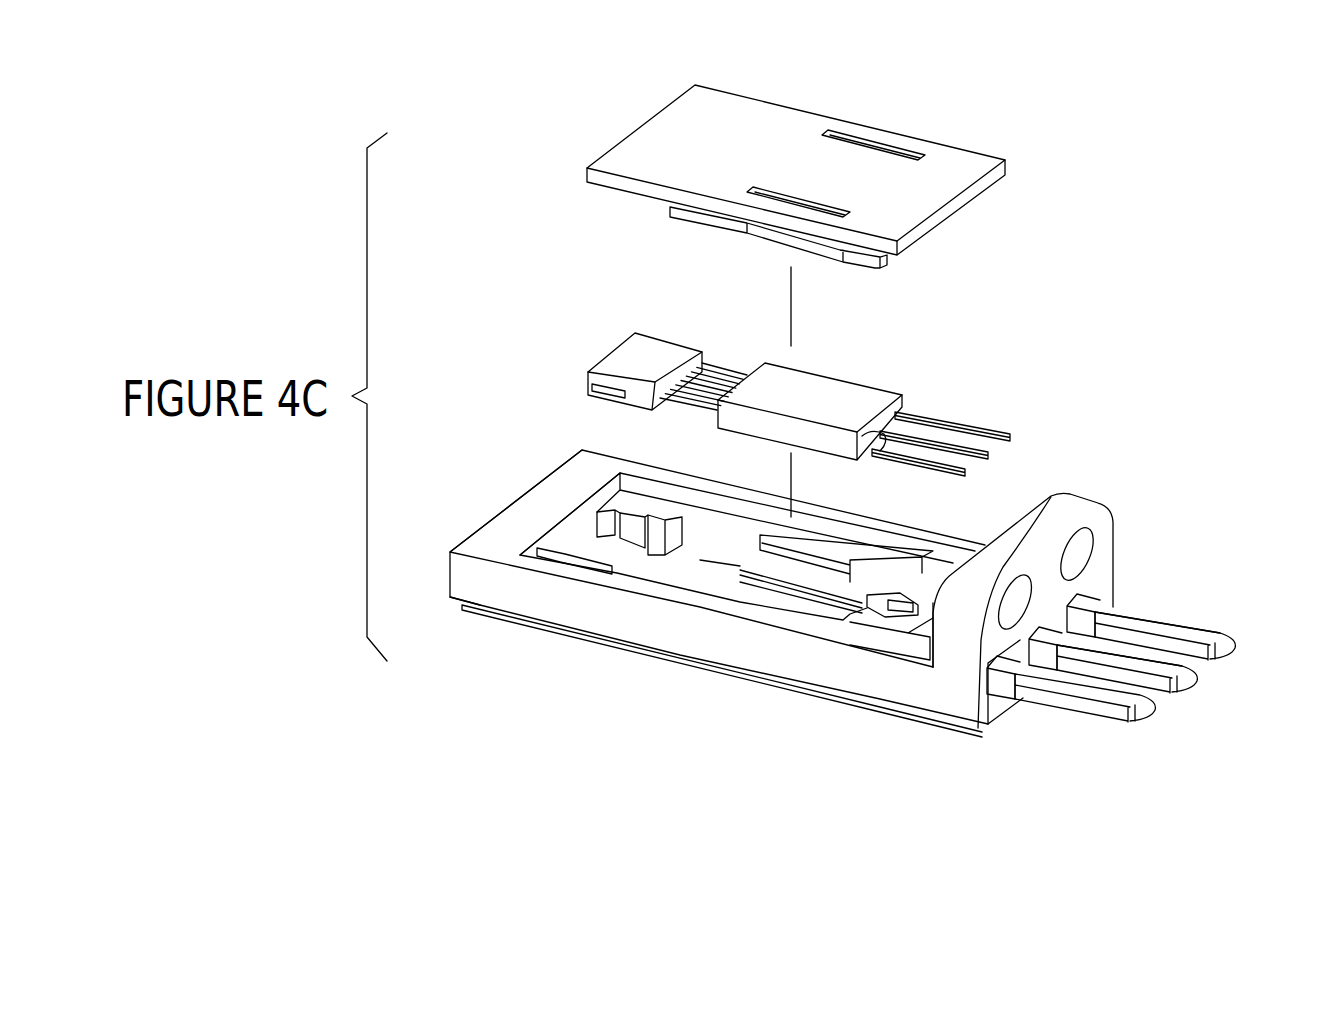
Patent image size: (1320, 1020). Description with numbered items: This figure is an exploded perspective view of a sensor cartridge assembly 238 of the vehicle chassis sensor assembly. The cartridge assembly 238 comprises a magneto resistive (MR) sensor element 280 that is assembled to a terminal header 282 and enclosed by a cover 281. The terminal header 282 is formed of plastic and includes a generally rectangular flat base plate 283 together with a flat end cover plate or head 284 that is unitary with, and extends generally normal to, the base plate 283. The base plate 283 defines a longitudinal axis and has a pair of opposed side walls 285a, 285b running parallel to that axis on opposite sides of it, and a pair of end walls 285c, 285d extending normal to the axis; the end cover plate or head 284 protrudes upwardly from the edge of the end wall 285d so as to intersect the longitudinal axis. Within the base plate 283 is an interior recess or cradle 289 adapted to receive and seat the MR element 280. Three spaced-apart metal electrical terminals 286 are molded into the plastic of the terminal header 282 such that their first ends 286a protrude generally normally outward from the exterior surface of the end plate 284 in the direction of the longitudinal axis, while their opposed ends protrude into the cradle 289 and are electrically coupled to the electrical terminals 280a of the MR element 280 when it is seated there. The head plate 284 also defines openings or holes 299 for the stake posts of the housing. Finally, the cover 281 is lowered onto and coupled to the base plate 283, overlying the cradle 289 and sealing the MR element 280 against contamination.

The cartridge assembly 238 is at (1153, 262).
The cover 281 is at (855, 125).
The magneto resistive (MR) sensor element 280 is at (842, 382).
The electrical terminals 280a is at (958, 455).
The terminal header 282 is at (776, 685).
The side wall 285a is at (665, 474).
The side wall 285b is at (607, 610).
The end wall 285c is at (527, 498).
The end wall 285d is at (978, 727).
The base plate 283 is at (728, 572).
The interior recess or cradle 289 is at (728, 573).
The end cover plate or head 284 is at (1115, 528).
The openings or holes 299 is at (1080, 540).
The electrical terminals 286 is at (1142, 690).
The first ends of the terminals 286a is at (1125, 615).